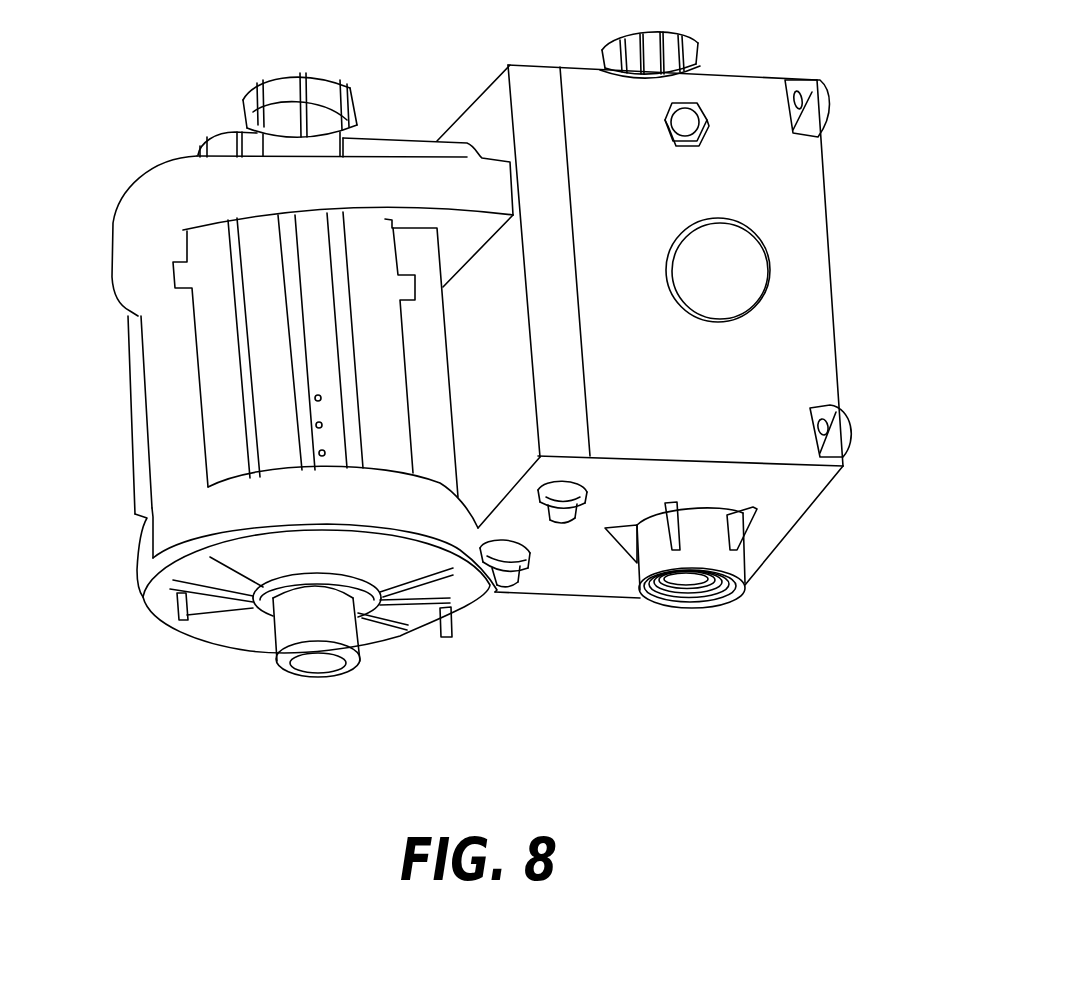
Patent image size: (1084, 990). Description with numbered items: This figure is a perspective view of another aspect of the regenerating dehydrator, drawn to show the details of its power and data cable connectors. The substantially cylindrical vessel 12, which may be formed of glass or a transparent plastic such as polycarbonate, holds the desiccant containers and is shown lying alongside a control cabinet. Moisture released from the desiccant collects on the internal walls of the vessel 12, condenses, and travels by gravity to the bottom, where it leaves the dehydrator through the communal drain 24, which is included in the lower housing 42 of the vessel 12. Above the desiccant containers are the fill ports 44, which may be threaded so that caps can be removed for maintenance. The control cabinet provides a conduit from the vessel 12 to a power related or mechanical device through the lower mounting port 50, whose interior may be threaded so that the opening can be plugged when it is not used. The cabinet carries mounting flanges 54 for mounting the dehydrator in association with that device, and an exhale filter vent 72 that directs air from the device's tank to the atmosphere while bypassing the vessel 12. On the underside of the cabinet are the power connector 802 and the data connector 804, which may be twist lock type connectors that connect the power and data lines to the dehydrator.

The vessel 12 is at (213, 377).
The communal drain 24 is at (307, 638).
The lower housing 42 is at (150, 557).
The fill ports 44 is at (312, 134).
The lower mounting port 50 is at (713, 606).
The mounting flanges 54 is at (822, 92).
The exhale filter vent 72 is at (667, 115).
The power connector 802 is at (497, 588).
The data connector 804 is at (577, 528).